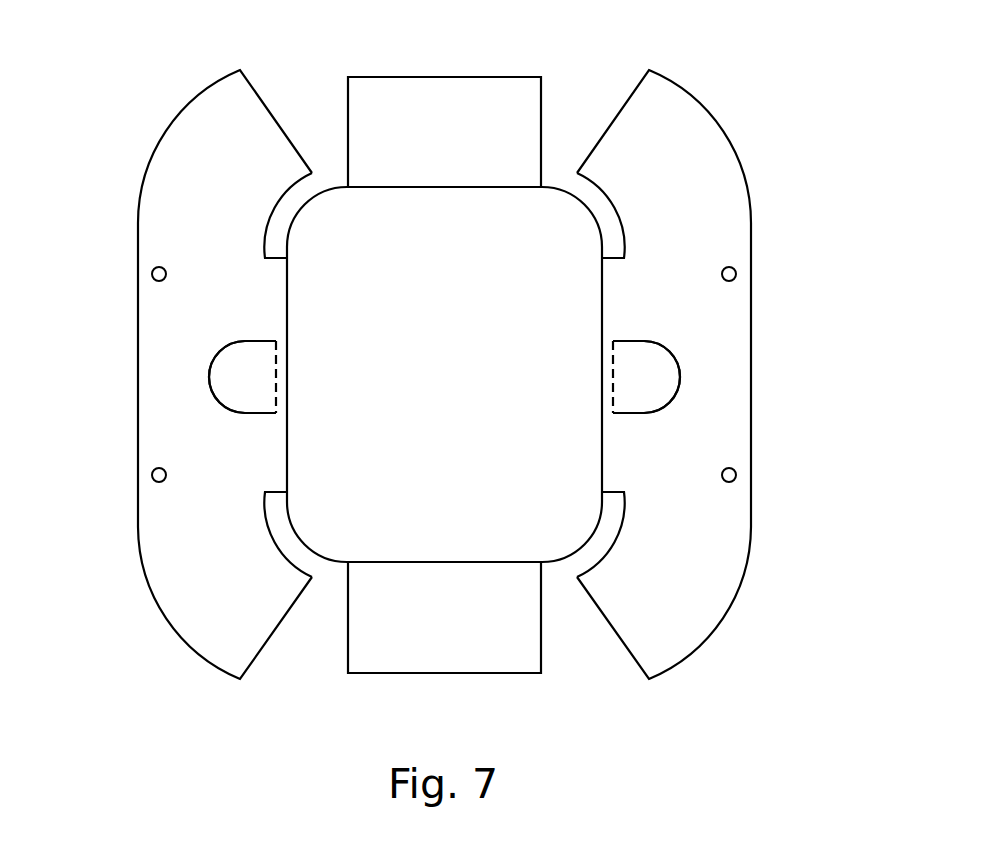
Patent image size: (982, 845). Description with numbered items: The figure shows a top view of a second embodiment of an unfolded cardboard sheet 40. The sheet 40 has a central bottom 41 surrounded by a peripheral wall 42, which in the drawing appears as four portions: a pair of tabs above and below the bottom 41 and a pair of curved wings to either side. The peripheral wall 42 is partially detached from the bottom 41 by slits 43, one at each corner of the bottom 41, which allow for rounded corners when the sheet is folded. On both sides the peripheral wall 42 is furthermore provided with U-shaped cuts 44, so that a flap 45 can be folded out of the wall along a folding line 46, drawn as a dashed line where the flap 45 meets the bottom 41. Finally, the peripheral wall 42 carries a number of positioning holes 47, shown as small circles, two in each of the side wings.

The unfolded cardboard sheet 40 is at (451, 359).
The bottom 41 is at (545, 322).
The peripheral wall 42 is at (500, 103).
The slits 43 is at (283, 210).
The U-shaped cuts 44 is at (215, 372).
The flap 45 is at (233, 387).
The folding line 46 is at (277, 377).
The positioning holes 47 is at (152, 274).